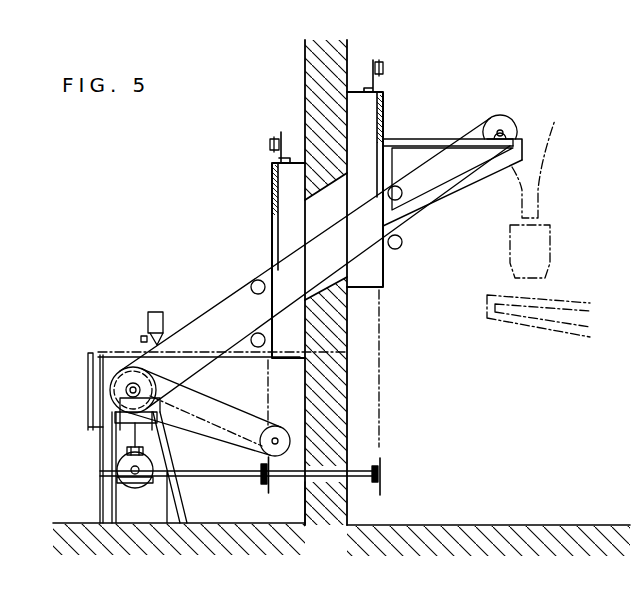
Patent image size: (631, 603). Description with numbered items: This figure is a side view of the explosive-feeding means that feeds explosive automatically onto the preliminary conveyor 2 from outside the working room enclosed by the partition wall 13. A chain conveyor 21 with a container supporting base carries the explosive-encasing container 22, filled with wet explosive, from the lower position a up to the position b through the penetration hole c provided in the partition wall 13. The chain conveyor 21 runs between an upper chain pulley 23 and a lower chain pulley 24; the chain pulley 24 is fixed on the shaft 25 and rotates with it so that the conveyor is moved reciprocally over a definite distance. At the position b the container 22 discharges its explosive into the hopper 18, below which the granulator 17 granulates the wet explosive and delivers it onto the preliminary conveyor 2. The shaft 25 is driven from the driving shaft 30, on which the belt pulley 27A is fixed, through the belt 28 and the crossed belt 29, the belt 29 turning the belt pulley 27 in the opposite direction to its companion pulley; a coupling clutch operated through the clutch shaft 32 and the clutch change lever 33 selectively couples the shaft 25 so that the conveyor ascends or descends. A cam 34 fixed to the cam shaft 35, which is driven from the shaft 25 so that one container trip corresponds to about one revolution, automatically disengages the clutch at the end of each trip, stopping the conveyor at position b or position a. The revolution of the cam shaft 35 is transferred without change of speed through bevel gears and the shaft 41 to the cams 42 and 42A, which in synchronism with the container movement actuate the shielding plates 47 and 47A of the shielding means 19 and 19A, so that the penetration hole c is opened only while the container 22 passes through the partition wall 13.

The partition wall 13 is at (318, 70).
The shielding means 19 is at (272, 178).
The shielding means 19A is at (383, 108).
The shielding plate 47 is at (270, 191).
The shielding plate 47A is at (383, 128).
The chain pulley 23 is at (497, 118).
The position b is at (508, 116).
The chain conveyor 21 is at (240, 287).
The hopper 18 is at (548, 140).
The granulator 17 is at (540, 250).
The preliminary conveyor 2 is at (545, 330).
The explosive-encasing container 22 is at (157, 312).
The position a is at (133, 337).
The clutch change lever 33 is at (90, 360).
The belt pulley 27 is at (110, 408).
The chain pulley 24 is at (118, 373).
The shaft 25 is at (126, 392).
The clutch shaft 32 is at (112, 432).
The cam 34 is at (130, 463).
The cam shaft 35 is at (135, 476).
The belt 28 is at (227, 428).
The belt 29 is at (218, 442).
The driving shaft 30 is at (280, 441).
The shaft 41 is at (247, 473).
The cam 42 is at (269, 482).
The cam 42A is at (382, 473).
The belt pulley 27A is at (308, 490).
The penetration hole c is at (383, 290).